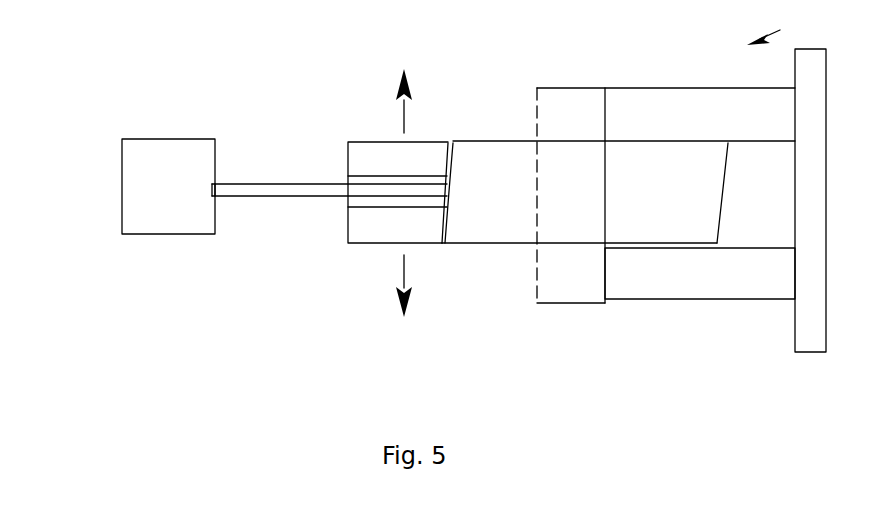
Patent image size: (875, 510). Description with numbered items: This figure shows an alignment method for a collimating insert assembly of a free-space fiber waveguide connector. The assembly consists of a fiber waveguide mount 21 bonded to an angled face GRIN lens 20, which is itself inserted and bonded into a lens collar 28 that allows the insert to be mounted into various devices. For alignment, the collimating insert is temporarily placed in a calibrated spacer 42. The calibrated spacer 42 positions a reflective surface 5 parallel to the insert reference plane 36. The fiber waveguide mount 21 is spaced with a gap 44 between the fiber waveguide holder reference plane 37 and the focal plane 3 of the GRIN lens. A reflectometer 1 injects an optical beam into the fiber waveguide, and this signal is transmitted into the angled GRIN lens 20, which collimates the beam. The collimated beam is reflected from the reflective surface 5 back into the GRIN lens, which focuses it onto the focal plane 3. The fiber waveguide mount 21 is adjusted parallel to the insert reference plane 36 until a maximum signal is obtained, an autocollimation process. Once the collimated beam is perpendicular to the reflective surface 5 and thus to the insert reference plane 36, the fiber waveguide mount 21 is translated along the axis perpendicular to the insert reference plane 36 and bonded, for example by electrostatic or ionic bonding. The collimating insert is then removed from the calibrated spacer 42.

The reflectometer 1 is at (170, 208).
The fiber waveguide mount 21 is at (348, 219).
The lens collar 28 is at (550, 280).
The focal plane 3 is at (448, 138).
The fiber waveguide holder reference plane 37 is at (447, 188).
The gap 44 is at (442, 243).
The insert reference plane 36 is at (605, 128).
The angled face GRIN lens 20 is at (638, 213).
The calibrated spacer 42 is at (705, 280).
The reflective surface 5 is at (792, 327).